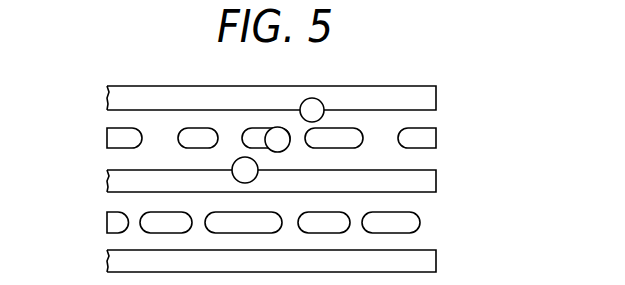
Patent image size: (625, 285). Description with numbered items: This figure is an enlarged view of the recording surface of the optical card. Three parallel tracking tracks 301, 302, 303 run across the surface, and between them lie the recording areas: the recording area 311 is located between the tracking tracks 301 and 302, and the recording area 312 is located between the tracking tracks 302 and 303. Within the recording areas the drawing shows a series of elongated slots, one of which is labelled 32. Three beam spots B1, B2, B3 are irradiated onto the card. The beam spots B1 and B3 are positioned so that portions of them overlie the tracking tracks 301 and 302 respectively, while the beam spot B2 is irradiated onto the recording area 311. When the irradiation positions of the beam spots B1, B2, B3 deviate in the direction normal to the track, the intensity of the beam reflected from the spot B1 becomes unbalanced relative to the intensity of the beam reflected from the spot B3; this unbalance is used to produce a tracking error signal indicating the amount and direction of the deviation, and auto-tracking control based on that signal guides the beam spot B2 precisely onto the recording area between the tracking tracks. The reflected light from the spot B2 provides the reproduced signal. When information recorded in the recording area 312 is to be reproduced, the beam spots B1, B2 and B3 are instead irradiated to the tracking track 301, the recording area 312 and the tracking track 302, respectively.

The tracking track 301 is at (437, 98).
The tracking track 302 is at (437, 180).
The tracking track 303 is at (437, 262).
The recording area 311 is at (274, 140).
The recording area 312 is at (448, 192).
The slot 32 is at (108, 138).
The beam spot B1 is at (310, 98).
The beam spot B2 is at (272, 127).
The beam spot B3 is at (234, 161).